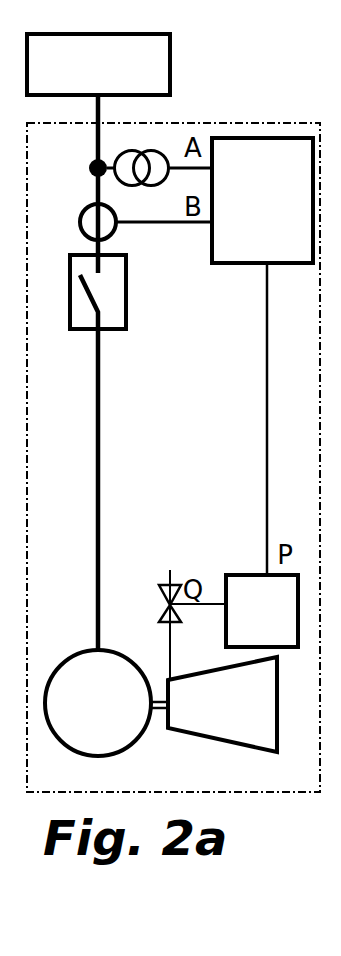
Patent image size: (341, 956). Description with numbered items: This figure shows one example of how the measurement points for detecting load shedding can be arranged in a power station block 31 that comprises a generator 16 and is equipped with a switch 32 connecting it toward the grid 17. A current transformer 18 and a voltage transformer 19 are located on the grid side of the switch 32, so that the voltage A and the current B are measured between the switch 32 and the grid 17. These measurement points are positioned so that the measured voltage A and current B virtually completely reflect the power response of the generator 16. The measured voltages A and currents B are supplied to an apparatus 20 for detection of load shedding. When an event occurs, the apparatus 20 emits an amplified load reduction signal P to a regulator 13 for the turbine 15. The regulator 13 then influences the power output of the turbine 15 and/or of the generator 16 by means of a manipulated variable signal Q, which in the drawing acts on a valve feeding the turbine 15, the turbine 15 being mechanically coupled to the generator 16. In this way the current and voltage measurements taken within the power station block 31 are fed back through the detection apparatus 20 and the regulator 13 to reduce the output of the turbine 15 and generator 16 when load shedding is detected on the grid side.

The regulator 13 is at (262, 611).
The turbine 15 is at (222, 704).
The generator 16 is at (106, 703).
The grid 17 is at (98, 64).
The current transformer 18 is at (128, 222).
The voltage transformer 19 is at (128, 168).
The apparatus for detection of load shedding 20 is at (262, 200).
The power station block 31 is at (173, 457).
The switch 32 is at (121, 292).